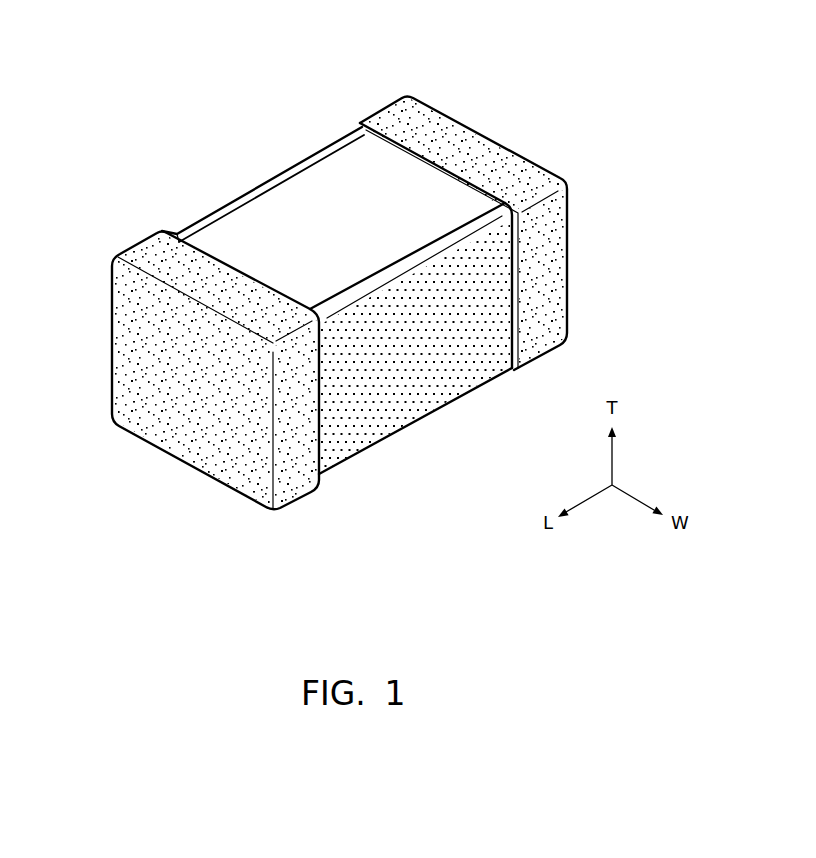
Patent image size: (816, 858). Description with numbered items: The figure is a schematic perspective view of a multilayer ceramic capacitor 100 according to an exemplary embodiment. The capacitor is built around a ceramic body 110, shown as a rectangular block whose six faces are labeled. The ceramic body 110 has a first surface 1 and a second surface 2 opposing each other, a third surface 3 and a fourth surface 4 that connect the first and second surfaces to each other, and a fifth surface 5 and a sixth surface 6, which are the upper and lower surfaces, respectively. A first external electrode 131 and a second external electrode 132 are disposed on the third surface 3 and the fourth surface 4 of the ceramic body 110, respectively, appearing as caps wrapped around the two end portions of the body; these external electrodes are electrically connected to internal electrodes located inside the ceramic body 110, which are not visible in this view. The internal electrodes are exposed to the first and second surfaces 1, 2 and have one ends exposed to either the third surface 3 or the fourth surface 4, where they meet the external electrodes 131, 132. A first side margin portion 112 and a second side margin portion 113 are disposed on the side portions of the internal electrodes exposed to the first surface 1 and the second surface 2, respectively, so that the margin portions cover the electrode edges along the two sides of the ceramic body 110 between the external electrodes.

The multilayer ceramic capacitor 100 is at (143, 56).
The ceramic body 110 is at (302, 192).
The first side margin portion 112 is at (250, 193).
The second side margin portion 113 is at (399, 418).
The first external electrode 131 is at (148, 248).
The second external electrode 132 is at (456, 133).
The first surface 1 is at (233, 242).
The second surface 2 is at (488, 305).
The third surface 3 is at (145, 338).
The fourth surface 4 is at (513, 180).
The fifth surface 5 is at (357, 172).
The sixth surface 6 is at (427, 377).